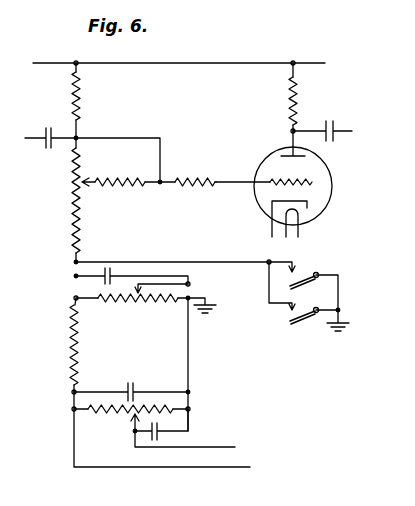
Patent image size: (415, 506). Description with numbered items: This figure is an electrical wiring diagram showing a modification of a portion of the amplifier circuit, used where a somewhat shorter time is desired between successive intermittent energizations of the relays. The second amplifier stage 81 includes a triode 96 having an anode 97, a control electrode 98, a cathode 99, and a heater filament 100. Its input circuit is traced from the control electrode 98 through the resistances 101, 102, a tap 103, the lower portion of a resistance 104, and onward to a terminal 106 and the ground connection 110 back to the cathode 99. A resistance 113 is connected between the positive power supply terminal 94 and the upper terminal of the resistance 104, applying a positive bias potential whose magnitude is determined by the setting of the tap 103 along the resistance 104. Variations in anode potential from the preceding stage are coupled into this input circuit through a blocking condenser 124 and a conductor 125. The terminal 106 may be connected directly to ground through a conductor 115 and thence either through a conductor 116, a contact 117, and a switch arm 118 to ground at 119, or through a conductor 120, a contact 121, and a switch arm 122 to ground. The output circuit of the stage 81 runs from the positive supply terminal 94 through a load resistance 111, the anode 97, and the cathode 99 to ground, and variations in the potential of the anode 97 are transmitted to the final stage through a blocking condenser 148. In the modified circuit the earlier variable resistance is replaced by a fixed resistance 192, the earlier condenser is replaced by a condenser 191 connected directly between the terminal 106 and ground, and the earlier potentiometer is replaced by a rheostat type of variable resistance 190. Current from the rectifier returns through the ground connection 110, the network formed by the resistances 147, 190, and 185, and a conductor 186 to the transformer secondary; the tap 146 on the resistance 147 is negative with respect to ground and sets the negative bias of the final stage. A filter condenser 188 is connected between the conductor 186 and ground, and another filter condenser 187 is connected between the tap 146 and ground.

The second amplifier stage 81 is at (262, 144).
The positive power supply terminal 94 is at (172, 63).
The triode 96 is at (333, 177).
The anode 97 is at (301, 157).
The control electrode 98 is at (312, 182).
The cathode 99 is at (307, 208).
The heater filament 100 is at (300, 222).
The resistance 101 is at (198, 187).
The resistance 102 is at (124, 187).
The tap 103 is at (86, 180).
The resistance 104 is at (70, 200).
The terminal 106 is at (72, 262).
The ground connection 110 is at (222, 296).
The load resistance 111 is at (290, 92).
The resistance 113 is at (82, 97).
The conductor 115 is at (172, 262).
The conductor 116 is at (278, 262).
The contact 117 is at (294, 274).
The switch arm 118 is at (305, 286).
The ground 119 is at (346, 324).
The conductor 120 is at (269, 278).
The contact 121 is at (290, 318).
The switch arm 122 is at (296, 326).
The blocking condenser 124 is at (46, 129).
The conductor 125 is at (138, 138).
The tap 146 is at (132, 423).
The resistance 147 is at (96, 415).
The blocking condenser 148 is at (336, 127).
The resistance 185 is at (70, 352).
The conductor 186 is at (155, 467).
The filter condenser 187 is at (158, 438).
The filter condenser 188 is at (135, 386).
The variable resistance 190 is at (123, 303).
The condenser 191 is at (100, 280).
The fixed resistance 192 is at (80, 250).